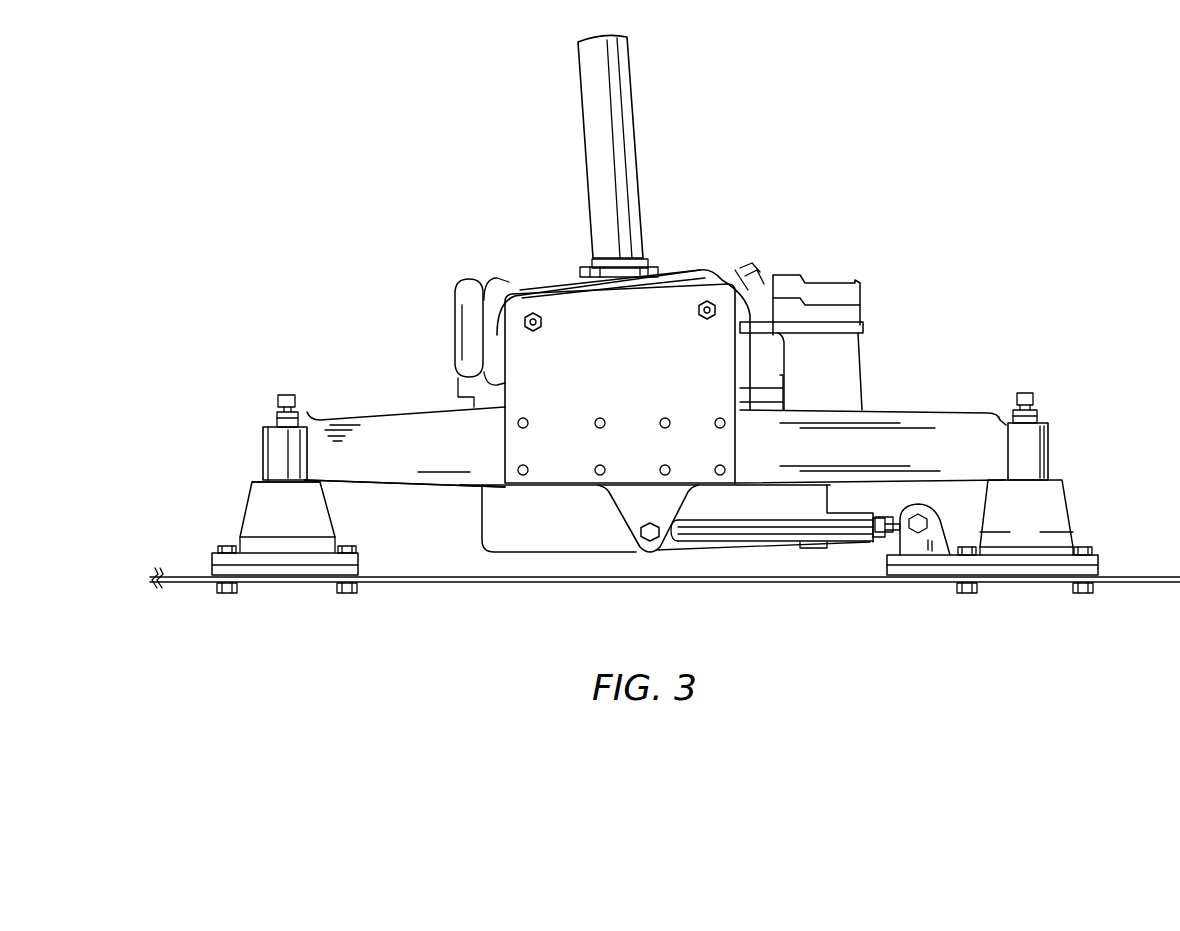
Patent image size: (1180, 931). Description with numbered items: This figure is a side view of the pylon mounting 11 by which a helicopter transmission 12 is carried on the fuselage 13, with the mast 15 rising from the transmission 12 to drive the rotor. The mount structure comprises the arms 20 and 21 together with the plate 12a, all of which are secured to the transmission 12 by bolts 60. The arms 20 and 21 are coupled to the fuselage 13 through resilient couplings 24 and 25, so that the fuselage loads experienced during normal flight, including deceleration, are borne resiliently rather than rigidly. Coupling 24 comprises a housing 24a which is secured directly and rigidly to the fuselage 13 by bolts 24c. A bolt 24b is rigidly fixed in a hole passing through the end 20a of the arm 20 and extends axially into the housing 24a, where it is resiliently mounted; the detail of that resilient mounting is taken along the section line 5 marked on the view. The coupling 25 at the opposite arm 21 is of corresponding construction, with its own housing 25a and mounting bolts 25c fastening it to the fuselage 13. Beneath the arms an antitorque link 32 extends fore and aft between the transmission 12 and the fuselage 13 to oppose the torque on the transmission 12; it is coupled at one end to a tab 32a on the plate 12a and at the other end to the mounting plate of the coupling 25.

The section line 5- 5 is at (287, 313).
The mounting 11 is at (384, 332).
The transmission 12 is at (755, 362).
The plate 12a is at (636, 342).
The fuselage 13 is at (437, 582).
The mast 15 is at (598, 102).
The arm 20 is at (428, 452).
The end of the arm 20a is at (283, 447).
The arm 21 is at (888, 452).
The resilient coupling 24 is at (201, 478).
The housing 24a is at (303, 513).
The bolt 24b is at (297, 414).
The bolts 24c is at (350, 548).
The resilient coupling 25 is at (1103, 475).
The right base 25a is at (1043, 510).
The right flange plate 25c is at (1090, 545).
The antitorque link 32 is at (795, 527).
The tab 32a is at (657, 515).
The bolts 60 is at (541, 331).